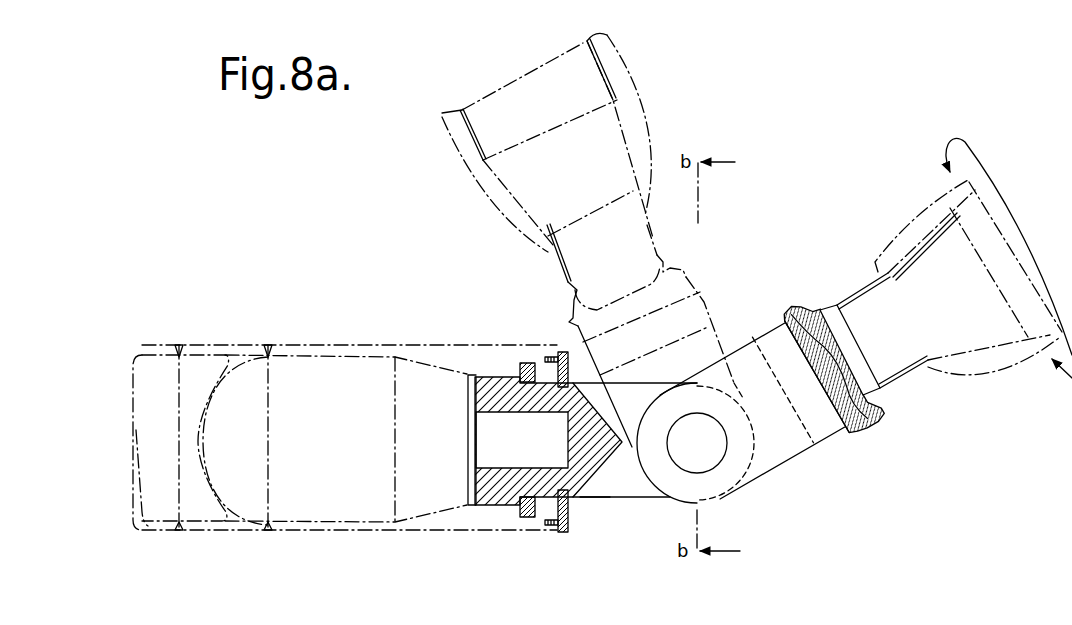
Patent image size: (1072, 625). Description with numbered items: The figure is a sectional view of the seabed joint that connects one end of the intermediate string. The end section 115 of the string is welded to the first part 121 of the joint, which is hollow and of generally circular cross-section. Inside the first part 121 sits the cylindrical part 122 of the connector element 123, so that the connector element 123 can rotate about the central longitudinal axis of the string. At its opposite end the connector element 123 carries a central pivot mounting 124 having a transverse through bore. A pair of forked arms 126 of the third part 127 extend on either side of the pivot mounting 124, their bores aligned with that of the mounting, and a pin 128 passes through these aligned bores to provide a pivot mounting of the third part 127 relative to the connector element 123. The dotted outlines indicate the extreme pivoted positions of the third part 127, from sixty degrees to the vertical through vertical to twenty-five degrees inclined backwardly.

The end section 115 is at (229, 521).
The first part 121 is at (443, 360).
The cylindrical part 122 is at (502, 488).
The connector element 123 is at (595, 502).
The central pivot mounting 124 is at (640, 493).
The forked arms 126 is at (773, 447).
The third part 127 is at (556, 289).
The pin 128 is at (707, 453).